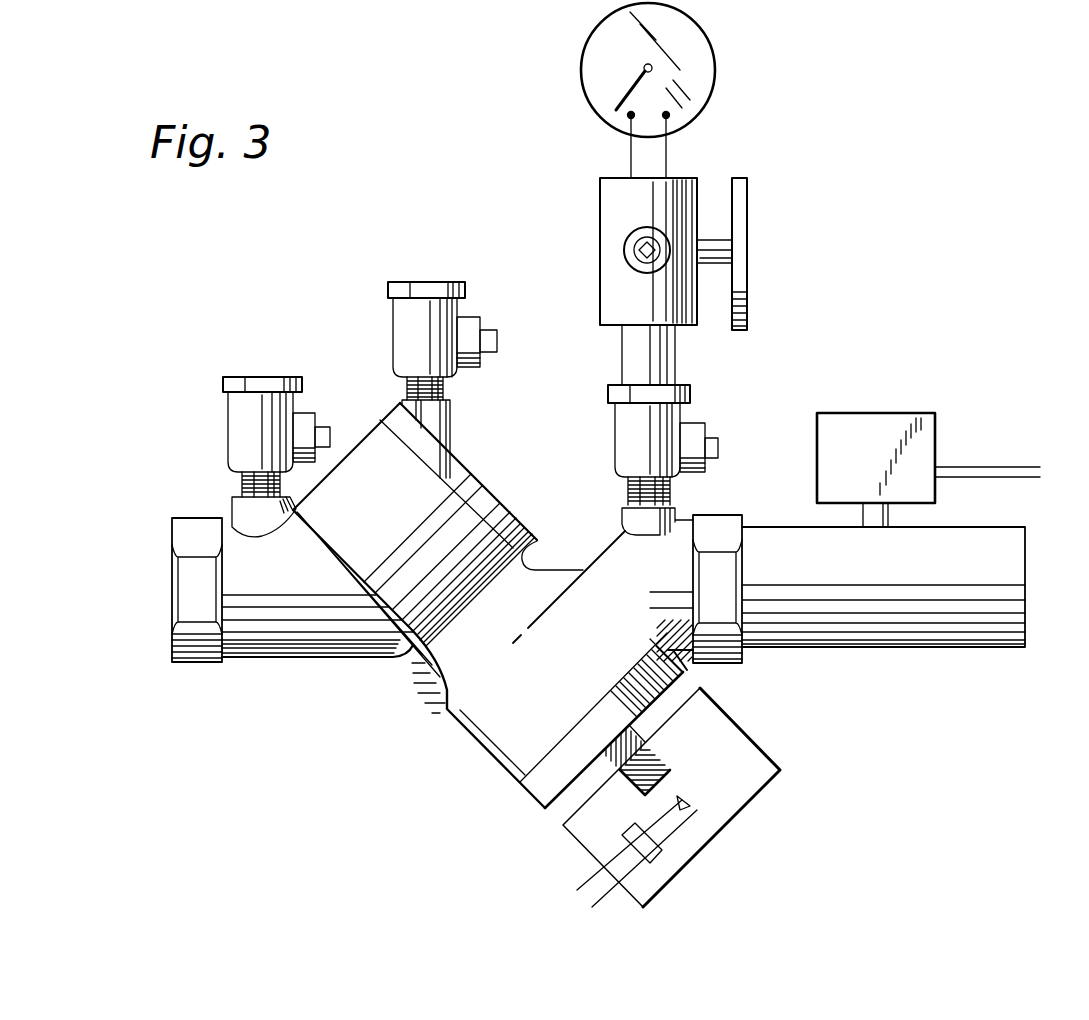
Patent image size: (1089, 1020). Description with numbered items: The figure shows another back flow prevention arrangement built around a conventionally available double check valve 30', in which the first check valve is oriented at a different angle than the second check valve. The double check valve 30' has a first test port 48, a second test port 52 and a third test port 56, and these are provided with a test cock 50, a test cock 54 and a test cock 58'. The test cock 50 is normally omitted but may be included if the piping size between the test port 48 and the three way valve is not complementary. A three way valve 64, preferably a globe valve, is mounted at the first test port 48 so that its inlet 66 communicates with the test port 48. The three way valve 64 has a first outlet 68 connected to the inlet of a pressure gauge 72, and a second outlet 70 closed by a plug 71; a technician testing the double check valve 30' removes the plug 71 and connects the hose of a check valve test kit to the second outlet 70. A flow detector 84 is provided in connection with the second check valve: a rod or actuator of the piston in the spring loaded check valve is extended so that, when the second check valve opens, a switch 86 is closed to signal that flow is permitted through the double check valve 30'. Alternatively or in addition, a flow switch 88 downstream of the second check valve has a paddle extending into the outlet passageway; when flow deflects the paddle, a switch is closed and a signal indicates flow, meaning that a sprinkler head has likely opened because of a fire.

The double check valve 30' is at (432, 605).
The test port 48 is at (680, 510).
The test cock 50 is at (690, 410).
The test port 52 is at (452, 420).
The test cock 54 is at (390, 291).
The test port 56 is at (235, 503).
The test cock 58' is at (229, 437).
The three way valve 64 is at (697, 185).
The inlet 66 is at (690, 322).
The first outlet 68 is at (668, 178).
The second outlet 70 is at (625, 243).
The plug 71 is at (657, 242).
The pressure gauge 72 is at (716, 64).
The flow detector 84 is at (748, 738).
The switch 86 is at (688, 822).
The flow switch 88 is at (940, 437).